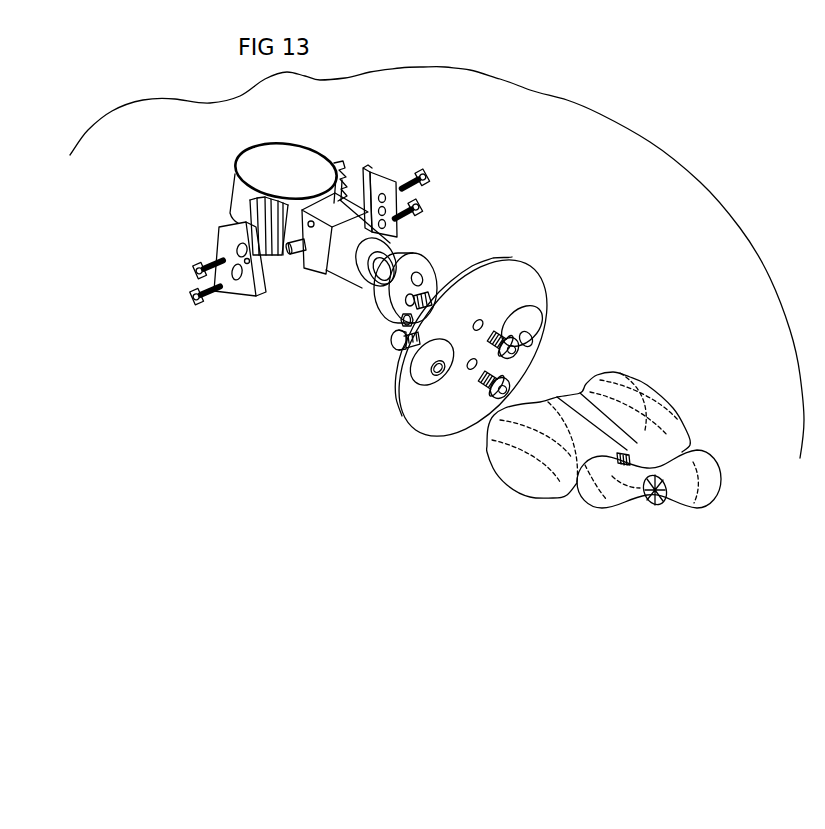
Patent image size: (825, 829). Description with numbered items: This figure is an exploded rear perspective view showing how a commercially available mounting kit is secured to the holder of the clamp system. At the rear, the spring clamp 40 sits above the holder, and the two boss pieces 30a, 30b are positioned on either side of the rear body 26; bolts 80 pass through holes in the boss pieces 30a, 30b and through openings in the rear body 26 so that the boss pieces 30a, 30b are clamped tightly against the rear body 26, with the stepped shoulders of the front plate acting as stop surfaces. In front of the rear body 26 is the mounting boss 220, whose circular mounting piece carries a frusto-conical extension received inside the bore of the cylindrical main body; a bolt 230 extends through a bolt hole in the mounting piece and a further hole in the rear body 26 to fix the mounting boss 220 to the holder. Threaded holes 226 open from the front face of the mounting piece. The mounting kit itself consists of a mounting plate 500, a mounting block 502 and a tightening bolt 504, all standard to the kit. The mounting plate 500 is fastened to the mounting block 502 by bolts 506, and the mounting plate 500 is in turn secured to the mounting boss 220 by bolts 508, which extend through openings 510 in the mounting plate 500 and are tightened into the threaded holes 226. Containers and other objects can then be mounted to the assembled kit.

The spring clamp 40 is at (303, 152).
The boss piece 30a is at (387, 181).
The boss piece 30b is at (232, 246).
The bolt 80 is at (428, 180).
The rear body 26 is at (332, 217).
The mounting boss 220 is at (407, 267).
The bolt 230 is at (440, 288).
The threaded hole 226 is at (404, 321).
The bolt 506 is at (392, 348).
The mounting plate 500 is at (430, 414).
The opening 510 is at (485, 327).
The bolt 508 is at (513, 350).
The mounting block 502 is at (537, 458).
The tightening bolt 504 is at (702, 492).